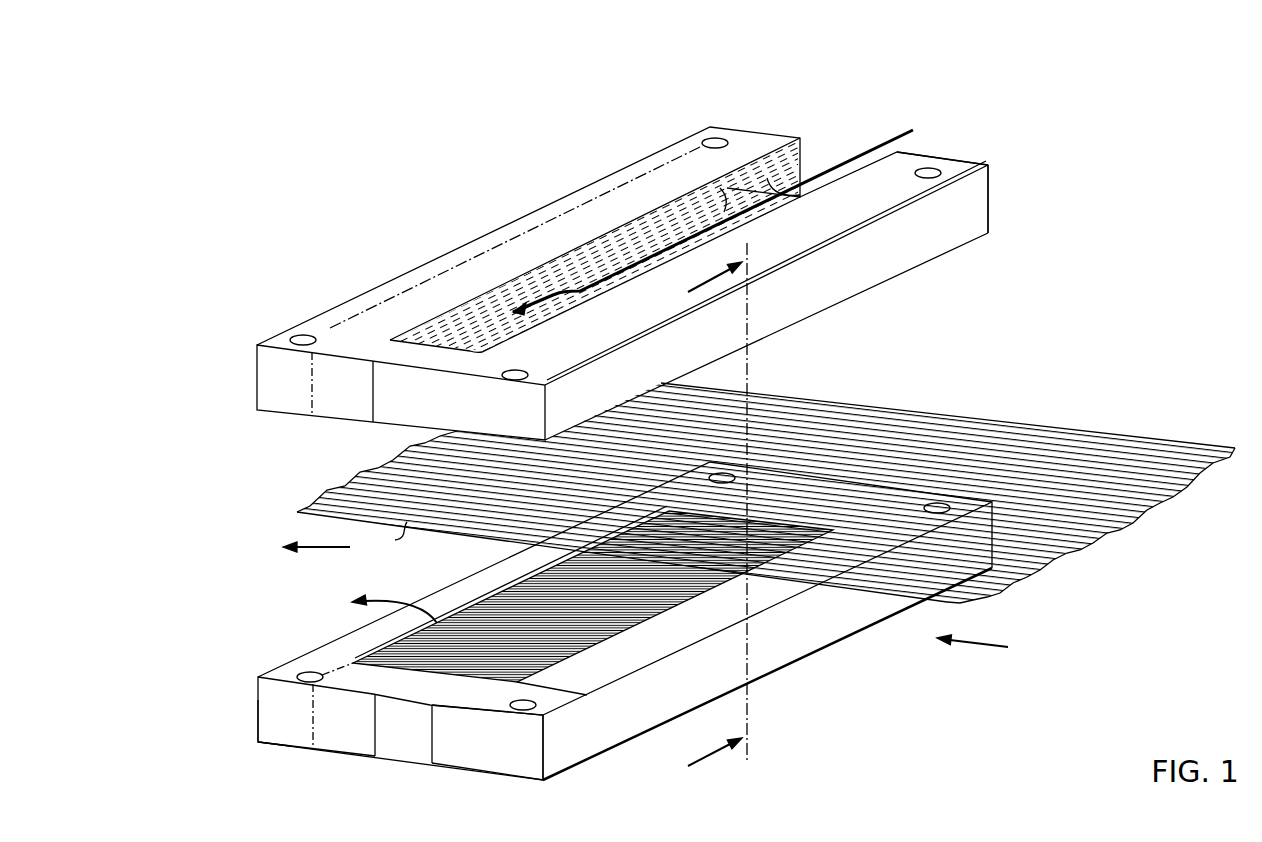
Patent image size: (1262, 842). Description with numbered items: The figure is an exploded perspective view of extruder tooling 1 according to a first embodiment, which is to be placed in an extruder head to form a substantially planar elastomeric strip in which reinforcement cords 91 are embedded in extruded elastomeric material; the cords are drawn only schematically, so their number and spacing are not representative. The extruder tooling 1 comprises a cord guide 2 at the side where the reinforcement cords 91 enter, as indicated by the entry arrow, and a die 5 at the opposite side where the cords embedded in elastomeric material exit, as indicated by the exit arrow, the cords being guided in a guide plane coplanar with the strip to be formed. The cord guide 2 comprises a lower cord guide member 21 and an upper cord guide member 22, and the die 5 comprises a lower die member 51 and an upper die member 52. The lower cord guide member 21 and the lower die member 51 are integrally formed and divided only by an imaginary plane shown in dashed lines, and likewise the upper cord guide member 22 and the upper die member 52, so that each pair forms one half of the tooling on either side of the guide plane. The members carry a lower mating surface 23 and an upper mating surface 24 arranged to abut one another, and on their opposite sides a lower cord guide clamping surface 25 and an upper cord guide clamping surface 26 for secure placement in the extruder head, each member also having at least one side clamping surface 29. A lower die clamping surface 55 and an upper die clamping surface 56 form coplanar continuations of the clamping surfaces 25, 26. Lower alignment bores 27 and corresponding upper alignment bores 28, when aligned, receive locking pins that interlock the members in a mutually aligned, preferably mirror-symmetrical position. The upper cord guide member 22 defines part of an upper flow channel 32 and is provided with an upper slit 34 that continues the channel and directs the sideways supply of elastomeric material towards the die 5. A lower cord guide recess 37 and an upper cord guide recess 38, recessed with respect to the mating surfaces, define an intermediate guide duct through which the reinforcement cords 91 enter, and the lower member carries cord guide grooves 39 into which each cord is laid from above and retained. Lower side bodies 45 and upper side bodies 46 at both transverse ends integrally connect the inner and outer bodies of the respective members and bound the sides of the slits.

The extruder tooling 1 is at (295, 180).
The cord guide 2 is at (760, 323).
The die 5 is at (262, 380).
The lower cord guide member 21 is at (567, 750).
The upper cord guide member 22 is at (988, 182).
The lower mating surface 23 is at (880, 473).
The upper mating surface 24 is at (975, 242).
The lower cord guide clamping surface 25 is at (457, 768).
The upper cord guide clamping surface 26 is at (377, 345).
The lower alignment bores 27 is at (736, 479).
The upper alignment bores 28 is at (705, 140).
The side clamping surface 29 is at (410, 377).
The upper flow channel 32 is at (814, 162).
The upper slit 34 is at (575, 258).
The lower cord guide recess 37 is at (665, 648).
The upper cord guide recess 38 is at (873, 280).
The cord guide grooves 39 is at (620, 635).
The lower side bodies 45 is at (856, 472).
The upper side bodies 46 is at (762, 192).
The lower die member 51 is at (258, 740).
The upper die member 52 is at (628, 185).
The lower die clamping surface 55 is at (282, 747).
The upper die clamping surface 56 is at (333, 322).
The reinforcement cords 91 is at (1027, 445).